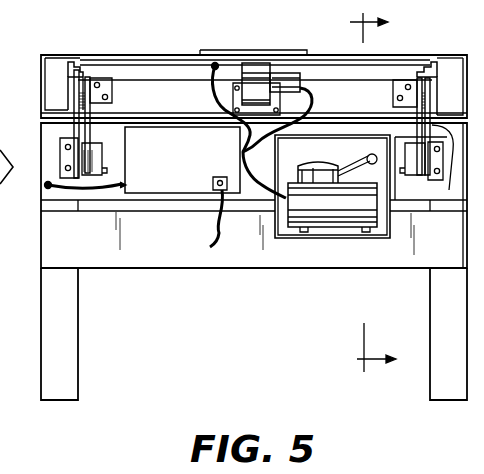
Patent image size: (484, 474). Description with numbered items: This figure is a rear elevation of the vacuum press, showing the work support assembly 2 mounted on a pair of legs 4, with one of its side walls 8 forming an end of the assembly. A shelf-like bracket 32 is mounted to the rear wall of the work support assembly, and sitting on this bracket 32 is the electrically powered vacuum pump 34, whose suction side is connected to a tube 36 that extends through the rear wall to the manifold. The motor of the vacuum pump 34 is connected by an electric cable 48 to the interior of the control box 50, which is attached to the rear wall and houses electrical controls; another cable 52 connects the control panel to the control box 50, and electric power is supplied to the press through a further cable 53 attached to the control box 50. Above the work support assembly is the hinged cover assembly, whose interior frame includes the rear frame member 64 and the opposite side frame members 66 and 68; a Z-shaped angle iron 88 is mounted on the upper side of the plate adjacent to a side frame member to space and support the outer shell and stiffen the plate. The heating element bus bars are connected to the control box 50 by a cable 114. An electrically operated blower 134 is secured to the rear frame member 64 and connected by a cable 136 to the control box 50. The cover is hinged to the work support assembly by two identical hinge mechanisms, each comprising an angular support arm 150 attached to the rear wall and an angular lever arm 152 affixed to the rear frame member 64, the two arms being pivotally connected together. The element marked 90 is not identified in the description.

The work support assembly 2 is at (6, 142).
The legs 4 is at (70, 322).
The side wall 8 is at (370, 191).
The shelf-like bracket 32 is at (273, 233).
The vacuum pump 34 is at (333, 206).
The tube 36 is at (358, 153).
The electric cable 48 is at (262, 180).
The control box 50 is at (168, 170).
The cable 52 is at (92, 187).
The cable 53 is at (212, 226).
The rear frame member 64 is at (175, 103).
The side frame member 66 is at (65, 88).
The side frame member 68 is at (445, 87).
The Z-shaped angle iron 88 is at (76, 63).
The top plate 90 is at (128, 56).
The cable 114 is at (213, 90).
The blower 134 is at (253, 73).
The cable 136 is at (306, 57).
The support arm 150 is at (452, 152).
The lever arm 152 is at (97, 130).